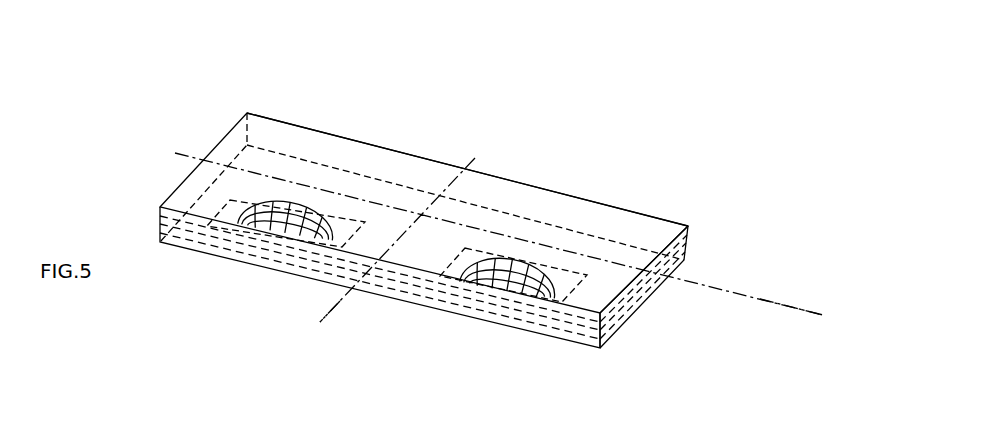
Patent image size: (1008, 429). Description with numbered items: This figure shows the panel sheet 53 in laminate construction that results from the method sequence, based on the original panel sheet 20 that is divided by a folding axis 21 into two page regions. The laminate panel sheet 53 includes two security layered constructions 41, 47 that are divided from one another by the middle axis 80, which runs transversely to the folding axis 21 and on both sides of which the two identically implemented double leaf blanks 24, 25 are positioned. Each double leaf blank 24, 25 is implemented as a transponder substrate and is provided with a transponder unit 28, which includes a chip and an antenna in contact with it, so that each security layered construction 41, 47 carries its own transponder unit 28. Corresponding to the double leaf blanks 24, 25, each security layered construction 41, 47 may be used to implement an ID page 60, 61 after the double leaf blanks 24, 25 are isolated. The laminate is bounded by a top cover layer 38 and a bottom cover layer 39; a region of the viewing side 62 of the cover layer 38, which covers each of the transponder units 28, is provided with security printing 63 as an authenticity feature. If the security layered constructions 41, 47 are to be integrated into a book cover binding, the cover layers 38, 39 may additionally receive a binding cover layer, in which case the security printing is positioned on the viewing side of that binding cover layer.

The panel sheet 20 is at (690, 243).
The folding axis 21 is at (774, 304).
The double leaf blank 24 is at (265, 114).
The double leaf blank 25 is at (600, 310).
The transponder unit 28 is at (262, 251).
The cover layer 38 is at (690, 228).
The cover layer 39 is at (690, 257).
The security layered construction 41 is at (520, 138).
The security layered construction 47 is at (367, 155).
The panel sheet 53 is at (673, 211).
The ID page 60 is at (302, 268).
The ID page 61 is at (513, 322).
The viewing side 62 is at (304, 148).
The security printing 63 is at (240, 212).
The middle axis 80 is at (334, 312).